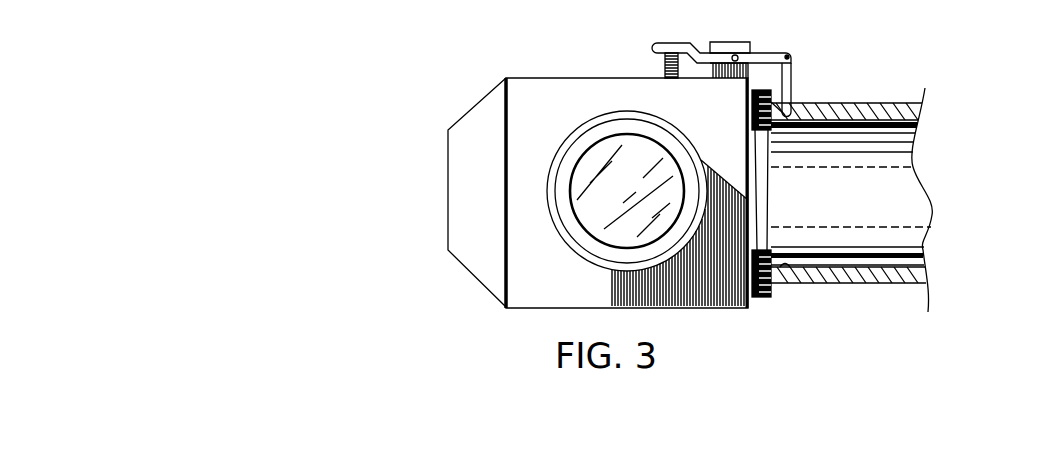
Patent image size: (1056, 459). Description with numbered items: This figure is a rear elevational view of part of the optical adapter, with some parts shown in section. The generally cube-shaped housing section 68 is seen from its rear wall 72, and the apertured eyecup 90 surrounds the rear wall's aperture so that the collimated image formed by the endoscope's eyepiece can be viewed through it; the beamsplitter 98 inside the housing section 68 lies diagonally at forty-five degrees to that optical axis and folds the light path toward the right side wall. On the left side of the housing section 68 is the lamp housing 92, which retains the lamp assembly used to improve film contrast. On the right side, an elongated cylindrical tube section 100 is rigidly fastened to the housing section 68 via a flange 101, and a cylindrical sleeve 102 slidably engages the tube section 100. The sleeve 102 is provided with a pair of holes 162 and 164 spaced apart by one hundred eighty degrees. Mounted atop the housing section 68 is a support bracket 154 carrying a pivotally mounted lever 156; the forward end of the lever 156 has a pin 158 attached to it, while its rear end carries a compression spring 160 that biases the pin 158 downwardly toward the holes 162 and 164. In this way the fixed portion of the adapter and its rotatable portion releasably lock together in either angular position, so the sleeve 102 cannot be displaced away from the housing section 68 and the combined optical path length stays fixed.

The housing section 68 is at (526, 72).
The rear wall 72 is at (541, 146).
The eyecup 90 is at (599, 117).
The lamp housing 92 is at (471, 110).
The beamsplitter 98 is at (640, 181).
The tube section 100 is at (933, 217).
The flange 101 is at (758, 297).
The sleeve 102 is at (865, 103).
The support bracket 154 is at (730, 42).
The lever 156 is at (675, 43).
The pin 158 is at (795, 70).
The compression spring 160 is at (664, 66).
The hole 162 is at (798, 102).
The hole 164 is at (790, 268).